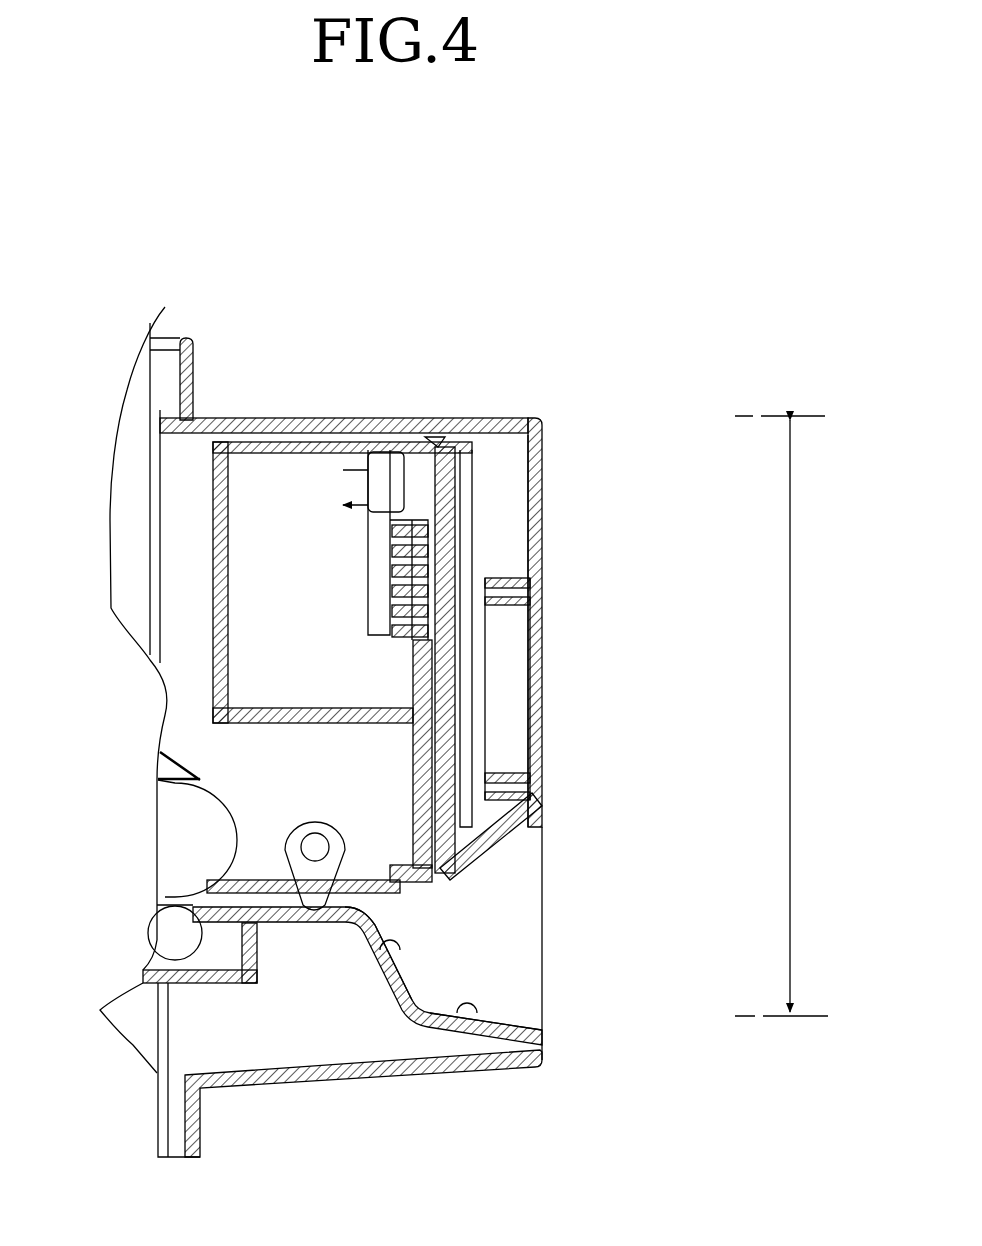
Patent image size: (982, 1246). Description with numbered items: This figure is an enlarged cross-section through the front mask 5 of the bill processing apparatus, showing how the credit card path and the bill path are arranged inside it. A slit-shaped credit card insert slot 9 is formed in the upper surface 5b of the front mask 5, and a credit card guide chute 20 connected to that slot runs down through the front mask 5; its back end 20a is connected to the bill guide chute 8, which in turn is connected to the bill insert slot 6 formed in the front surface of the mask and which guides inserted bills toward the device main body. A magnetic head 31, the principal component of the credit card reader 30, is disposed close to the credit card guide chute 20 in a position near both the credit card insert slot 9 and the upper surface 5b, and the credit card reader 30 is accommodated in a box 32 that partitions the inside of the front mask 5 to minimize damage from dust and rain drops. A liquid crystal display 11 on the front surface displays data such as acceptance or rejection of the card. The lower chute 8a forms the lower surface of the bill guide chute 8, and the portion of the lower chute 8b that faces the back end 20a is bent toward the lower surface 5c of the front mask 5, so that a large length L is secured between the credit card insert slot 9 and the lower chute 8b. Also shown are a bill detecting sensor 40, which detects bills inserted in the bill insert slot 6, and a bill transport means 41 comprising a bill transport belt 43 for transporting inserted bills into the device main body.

The front mask 5 is at (537, 422).
The upper surface 5b is at (343, 418).
The lower surface 5c is at (315, 1077).
The bill insert slot 6 is at (545, 825).
The bill guide chute 8 is at (514, 927).
The lower chute 8a is at (363, 967).
The lower chute 8b is at (477, 1013).
The credit card insert slot 9 is at (438, 440).
The liquid crystal display 11 is at (515, 677).
The credit card guide chute 20 is at (433, 657).
The back end 20a is at (438, 877).
The credit card reader 30 is at (333, 487).
The magnetic head 31 is at (382, 470).
The box 32 is at (213, 543).
The bill detecting sensor 40 is at (345, 848).
The bill transport means 41 is at (105, 832).
The bill transport belt 43 is at (188, 762).
The length L is at (790, 722).